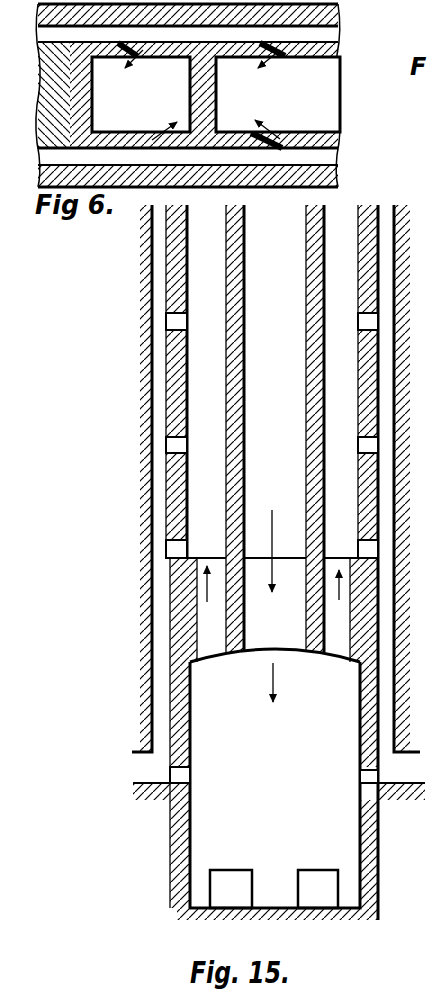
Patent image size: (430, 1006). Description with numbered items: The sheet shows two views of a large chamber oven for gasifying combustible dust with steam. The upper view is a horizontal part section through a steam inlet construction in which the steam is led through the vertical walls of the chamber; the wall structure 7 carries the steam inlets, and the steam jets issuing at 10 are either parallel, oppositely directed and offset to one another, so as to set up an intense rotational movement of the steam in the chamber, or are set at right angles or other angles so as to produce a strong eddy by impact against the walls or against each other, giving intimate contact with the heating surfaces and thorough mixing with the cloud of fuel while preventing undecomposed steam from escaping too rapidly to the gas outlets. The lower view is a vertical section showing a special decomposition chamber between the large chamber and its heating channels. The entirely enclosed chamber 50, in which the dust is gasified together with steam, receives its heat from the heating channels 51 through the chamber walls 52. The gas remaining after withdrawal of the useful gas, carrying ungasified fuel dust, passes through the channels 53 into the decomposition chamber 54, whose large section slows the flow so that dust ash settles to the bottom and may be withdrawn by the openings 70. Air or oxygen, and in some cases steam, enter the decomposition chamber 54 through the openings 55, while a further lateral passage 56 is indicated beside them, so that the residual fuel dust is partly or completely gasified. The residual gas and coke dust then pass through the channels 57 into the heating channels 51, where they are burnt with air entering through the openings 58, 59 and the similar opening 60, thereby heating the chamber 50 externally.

In FIG. 6, the cylinder wall 7 is at (230, 93).
In FIG. 6, the steam jet outlet 10 is at (148, 50).
In FIG. 15, the chamber 50 is at (263, 303).
In FIG. 15, the heating channels 51 is at (272, 562).
In FIG. 15, the chamber walls 52 is at (308, 366).
In FIG. 15, the channels 53 is at (275, 588).
In FIG. 15, the decomposition chamber 54 is at (275, 778).
In FIG. 15, the openings 55 is at (178, 774).
In FIG. 15, the inlet passage 56 is at (160, 770).
In FIG. 15, the channels 57 is at (276, 596).
In FIG. 15, the openings 58 is at (180, 550).
In FIG. 15, the openings 59 is at (175, 445).
In FIG. 15, the opening 60 is at (177, 322).
In FIG. 15, the openings 70 is at (318, 900).